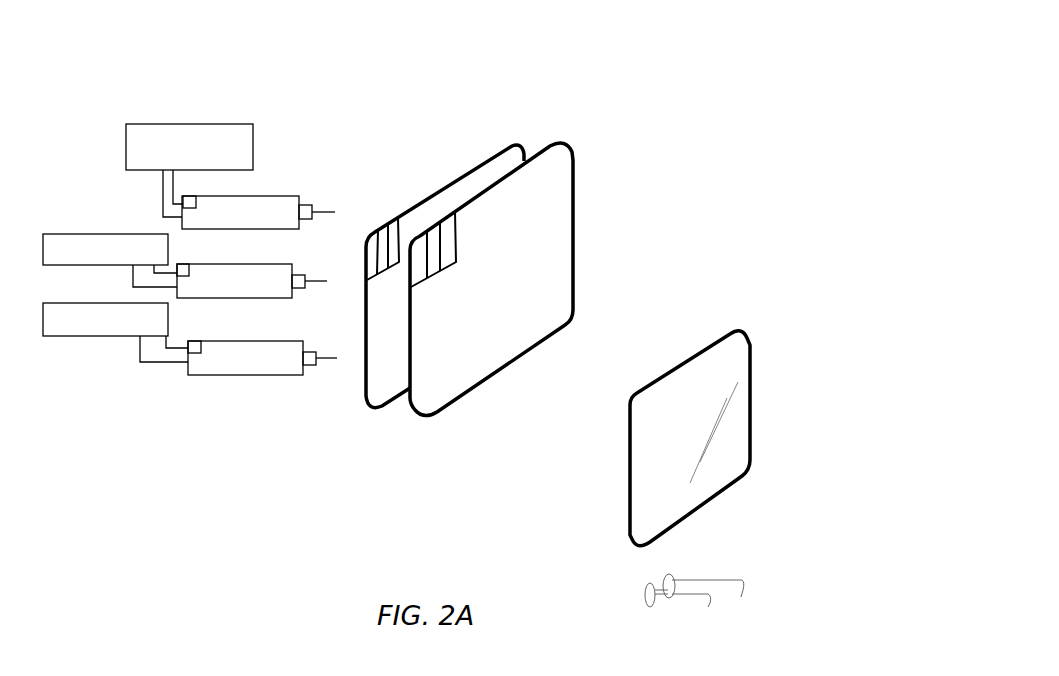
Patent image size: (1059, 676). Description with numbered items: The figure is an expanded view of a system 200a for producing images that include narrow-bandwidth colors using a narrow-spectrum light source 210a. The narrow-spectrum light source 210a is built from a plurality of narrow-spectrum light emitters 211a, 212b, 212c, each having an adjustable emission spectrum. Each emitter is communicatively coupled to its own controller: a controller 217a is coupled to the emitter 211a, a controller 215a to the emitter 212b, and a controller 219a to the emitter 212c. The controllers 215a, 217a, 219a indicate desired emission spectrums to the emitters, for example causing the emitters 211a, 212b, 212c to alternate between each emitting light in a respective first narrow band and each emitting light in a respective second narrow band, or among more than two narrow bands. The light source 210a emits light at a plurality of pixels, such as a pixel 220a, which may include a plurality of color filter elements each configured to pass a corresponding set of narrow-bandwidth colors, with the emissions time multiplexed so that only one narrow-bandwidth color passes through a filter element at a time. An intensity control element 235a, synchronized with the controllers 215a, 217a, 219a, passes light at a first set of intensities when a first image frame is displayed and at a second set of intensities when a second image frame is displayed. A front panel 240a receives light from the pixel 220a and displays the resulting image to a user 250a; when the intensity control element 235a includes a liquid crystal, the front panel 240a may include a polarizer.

The system 200a is at (740, 92).
The narrow-spectrum light source 210a is at (268, 142).
The narrow-spectrum light emitter 211a is at (267, 207).
The narrow-spectrum light emitter 212b is at (263, 282).
The narrow-spectrum light emitter 212c is at (248, 356).
The controller 215a is at (52, 239).
The controller 217a is at (190, 125).
The controller 219a is at (52, 317).
The pixel 220a is at (425, 230).
The intensity control element 235a is at (375, 236).
The front panel 240a is at (702, 342).
The user 250a is at (687, 580).